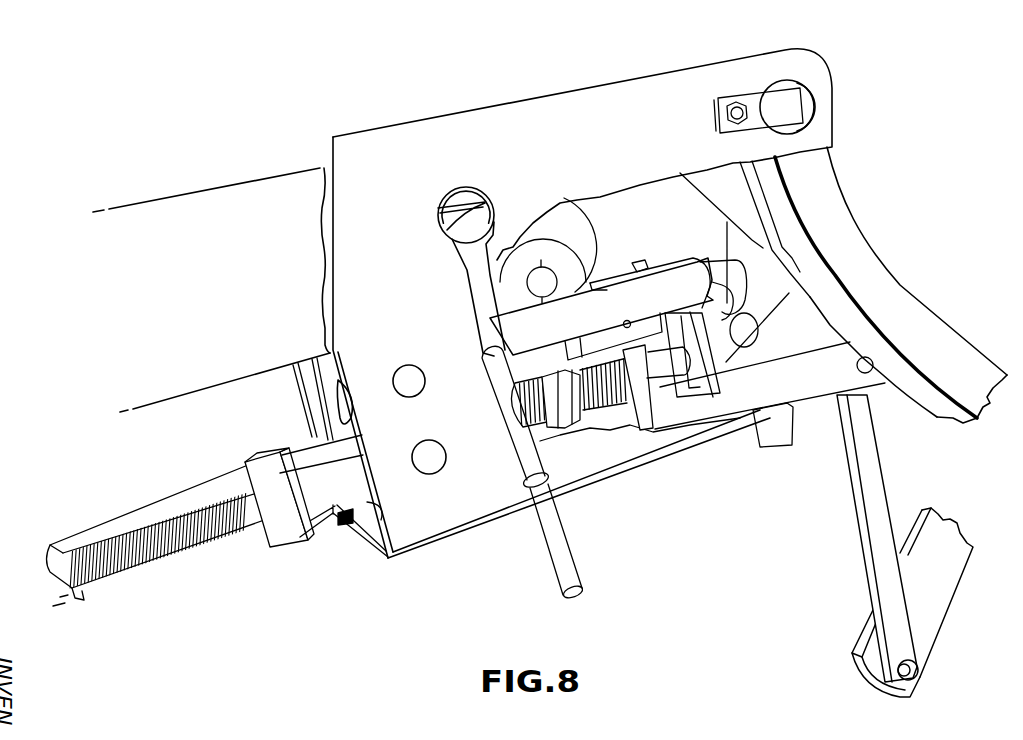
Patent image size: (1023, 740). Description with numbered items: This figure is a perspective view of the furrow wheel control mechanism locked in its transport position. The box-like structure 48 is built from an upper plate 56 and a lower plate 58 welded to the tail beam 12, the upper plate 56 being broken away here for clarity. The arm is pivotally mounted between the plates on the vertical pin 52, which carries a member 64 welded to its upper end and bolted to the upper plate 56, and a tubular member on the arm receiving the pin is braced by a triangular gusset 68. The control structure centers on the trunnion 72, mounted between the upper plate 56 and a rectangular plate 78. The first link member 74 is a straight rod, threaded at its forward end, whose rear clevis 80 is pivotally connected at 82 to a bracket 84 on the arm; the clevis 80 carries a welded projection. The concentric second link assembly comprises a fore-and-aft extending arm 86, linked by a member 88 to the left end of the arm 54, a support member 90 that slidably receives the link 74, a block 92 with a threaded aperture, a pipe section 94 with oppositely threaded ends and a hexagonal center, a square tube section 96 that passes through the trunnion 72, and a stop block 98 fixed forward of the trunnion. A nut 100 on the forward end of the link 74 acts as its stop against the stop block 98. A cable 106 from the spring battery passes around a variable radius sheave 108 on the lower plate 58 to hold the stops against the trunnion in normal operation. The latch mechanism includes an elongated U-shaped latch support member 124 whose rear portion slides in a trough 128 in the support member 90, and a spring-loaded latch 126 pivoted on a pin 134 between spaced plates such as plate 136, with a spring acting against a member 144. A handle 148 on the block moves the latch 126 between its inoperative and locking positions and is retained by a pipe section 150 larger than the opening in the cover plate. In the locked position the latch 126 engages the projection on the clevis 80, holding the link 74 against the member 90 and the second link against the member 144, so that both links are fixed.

The tail beam 12 is at (226, 190).
The box-like structure 48 is at (466, 98).
The vertical pin 52 is at (795, 77).
The arm 54 is at (940, 617).
The upper plate 56 is at (443, 530).
The lower plate 58 is at (305, 390).
The member 64 is at (757, 100).
The triangular gusset 68 is at (707, 185).
The trunnion 72 is at (381, 518).
The first link member 74 is at (158, 557).
The rectangular plate 78 is at (330, 408).
The clevis 80 is at (728, 308).
The pivotal connection 82 is at (750, 340).
The bracket 84 is at (770, 287).
The fore-and-aft extending arm 86 is at (818, 396).
The member 88 is at (883, 497).
The support member 90 is at (717, 385).
The block 92 is at (652, 398).
The pipe section 94 is at (547, 433).
The square tube section 96 is at (322, 513).
The stop block 98 is at (297, 547).
The nut 100 is at (68, 604).
The cable 106 is at (142, 518).
The variable radius sheave 108 is at (577, 223).
The U-shaped latch support member 124 is at (673, 272).
The spring-loaded latch 126 is at (715, 290).
The trough 128 is at (612, 280).
The pin 134 is at (628, 320).
The plate 136 is at (592, 340).
The member 144 is at (601, 306).
The handle 148 is at (565, 557).
The pipe section 150 is at (517, 457).